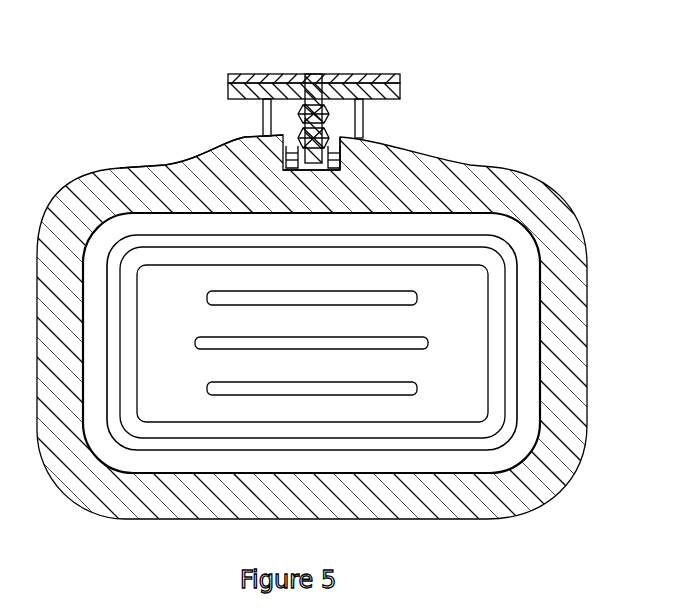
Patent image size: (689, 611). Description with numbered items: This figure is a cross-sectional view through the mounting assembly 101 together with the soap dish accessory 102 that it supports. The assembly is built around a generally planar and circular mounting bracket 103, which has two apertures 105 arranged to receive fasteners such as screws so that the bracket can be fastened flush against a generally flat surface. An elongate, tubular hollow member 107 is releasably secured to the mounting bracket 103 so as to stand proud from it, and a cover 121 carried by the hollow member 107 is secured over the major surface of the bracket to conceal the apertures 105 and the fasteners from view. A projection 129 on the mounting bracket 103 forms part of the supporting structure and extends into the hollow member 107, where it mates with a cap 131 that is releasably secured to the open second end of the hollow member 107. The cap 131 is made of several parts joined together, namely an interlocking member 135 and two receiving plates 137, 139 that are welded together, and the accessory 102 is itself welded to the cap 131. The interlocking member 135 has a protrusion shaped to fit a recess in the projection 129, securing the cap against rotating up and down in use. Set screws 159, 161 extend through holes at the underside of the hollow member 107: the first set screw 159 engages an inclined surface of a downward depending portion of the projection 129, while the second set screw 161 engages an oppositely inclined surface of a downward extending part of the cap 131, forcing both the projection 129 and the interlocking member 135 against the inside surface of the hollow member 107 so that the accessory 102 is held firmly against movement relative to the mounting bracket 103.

The mounting assembly 101 is at (293, 91).
The soap dish accessory 102 is at (344, 305).
The mounting bracket 103 is at (301, 64).
The apertures 105 is at (258, 86).
The elongate hollow member 107 is at (361, 120).
The cover 121 is at (228, 93).
The projection 129 is at (313, 92).
The cap 131 is at (341, 155).
The interlocking member 135 is at (224, 148).
The receiving plate 137 is at (342, 158).
The receiving plate 139 is at (342, 166).
The first set screw 159 is at (300, 113).
The second set screw 161 is at (238, 134).